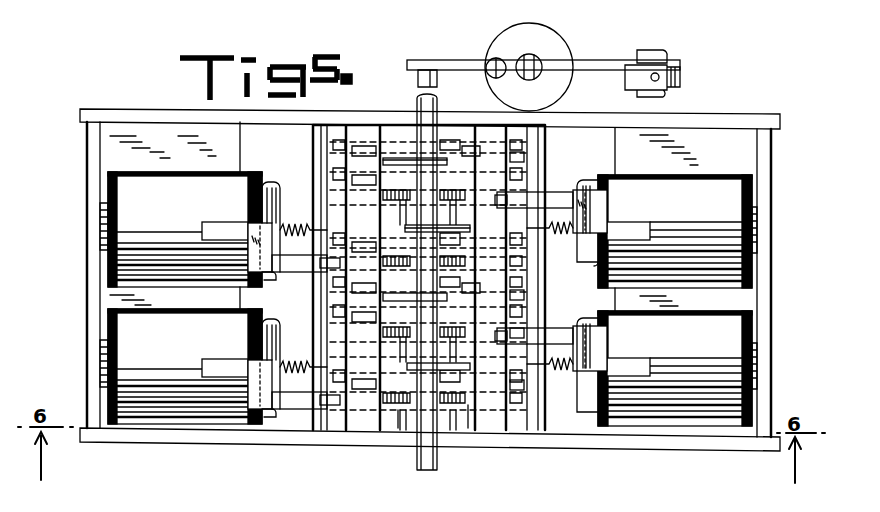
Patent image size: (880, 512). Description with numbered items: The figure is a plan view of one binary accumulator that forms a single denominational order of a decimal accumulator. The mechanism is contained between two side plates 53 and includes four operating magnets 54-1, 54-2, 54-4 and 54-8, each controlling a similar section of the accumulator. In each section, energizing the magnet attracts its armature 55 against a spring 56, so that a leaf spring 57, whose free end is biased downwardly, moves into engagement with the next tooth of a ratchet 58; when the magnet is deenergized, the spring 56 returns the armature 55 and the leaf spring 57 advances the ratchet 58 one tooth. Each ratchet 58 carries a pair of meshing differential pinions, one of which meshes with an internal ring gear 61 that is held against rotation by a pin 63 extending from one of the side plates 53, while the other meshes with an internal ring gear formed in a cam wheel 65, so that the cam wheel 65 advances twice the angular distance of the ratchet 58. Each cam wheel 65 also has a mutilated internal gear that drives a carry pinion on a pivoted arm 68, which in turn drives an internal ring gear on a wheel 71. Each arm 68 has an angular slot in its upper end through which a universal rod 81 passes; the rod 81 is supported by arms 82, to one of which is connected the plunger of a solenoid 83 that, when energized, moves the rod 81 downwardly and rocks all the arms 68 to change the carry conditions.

The side plates 53 is at (121, 111).
The operating magnet 54-1 is at (210, 311).
The operating magnet 54-2 is at (722, 311).
The operating magnet 54-4 is at (238, 182).
The operating magnet 54-8 is at (728, 171).
The armature 55 is at (272, 184).
The spring 56 is at (298, 224).
The leaf spring 57 is at (300, 273).
The ratchet 58 is at (402, 232).
The internal ring gear 61 is at (468, 416).
The pin 63 is at (400, 429).
The cam wheel 65 is at (522, 157).
The arm 68 is at (398, 158).
The wheel 71 is at (527, 332).
The universal rod 81 is at (437, 98).
The arm 82 is at (608, 64).
The solenoid 83 is at (557, 55).